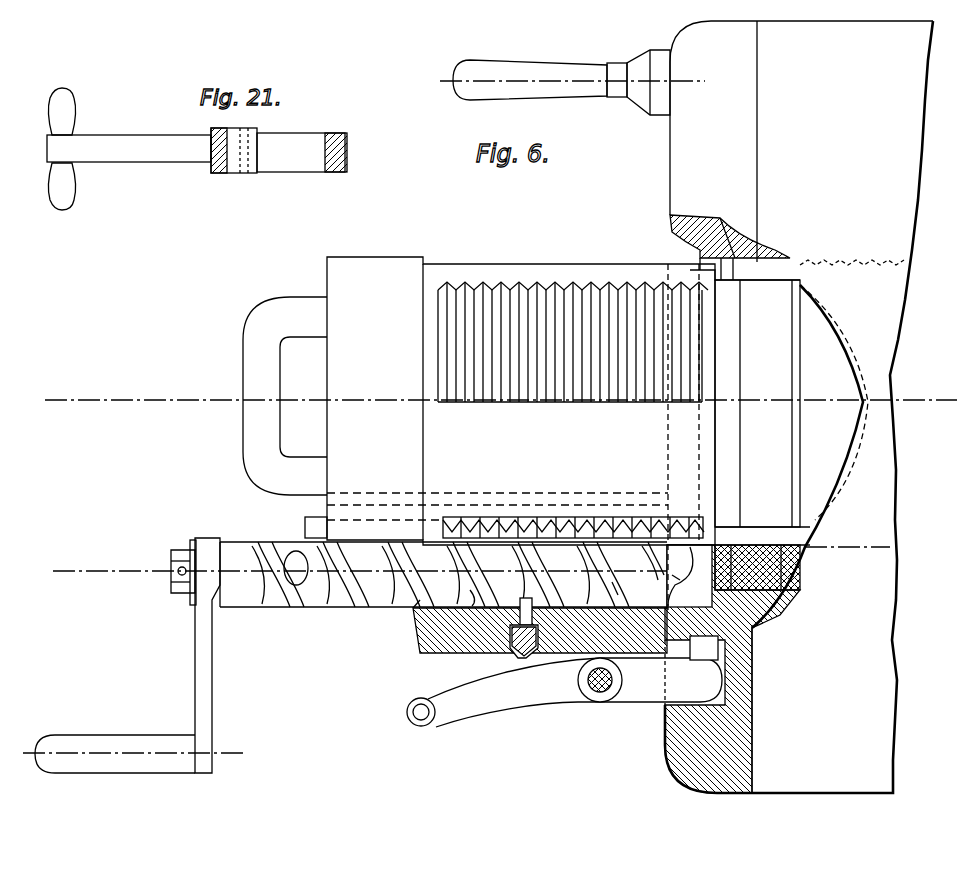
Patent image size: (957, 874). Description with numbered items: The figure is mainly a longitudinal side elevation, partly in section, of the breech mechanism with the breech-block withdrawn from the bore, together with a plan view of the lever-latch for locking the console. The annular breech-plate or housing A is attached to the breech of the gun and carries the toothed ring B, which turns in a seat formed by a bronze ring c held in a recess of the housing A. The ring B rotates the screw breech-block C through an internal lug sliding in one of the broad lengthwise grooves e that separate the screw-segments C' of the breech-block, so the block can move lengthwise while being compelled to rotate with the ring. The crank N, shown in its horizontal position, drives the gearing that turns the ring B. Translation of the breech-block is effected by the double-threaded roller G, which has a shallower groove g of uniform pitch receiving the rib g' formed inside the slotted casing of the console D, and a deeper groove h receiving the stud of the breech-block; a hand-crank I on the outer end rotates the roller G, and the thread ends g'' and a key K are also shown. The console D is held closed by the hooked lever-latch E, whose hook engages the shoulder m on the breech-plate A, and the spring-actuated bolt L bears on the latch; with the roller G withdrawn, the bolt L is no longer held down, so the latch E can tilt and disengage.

In FIG. 6, the annular breech-plate or housing A is at (655, 762).
In FIG. 6, the toothed ring B is at (775, 258).
In FIG. 6, the bronze ring c is at (737, 232).
In FIG. 6, the screw breech-block C is at (479, 433).
In FIG. 6, the splined portion of cylinder C' is at (573, 342).
In FIG. 6, the lengthwise grooves e is at (504, 481).
In FIG. 6, the key K is at (305, 527).
In FIG. 6, the crank N is at (561, 76).
In FIG. 6, the double-threaded roller G is at (443, 574).
In FIG. 6, the deeper thread or groove h is at (296, 568).
In FIG. 6, the shallower thread or groove g is at (459, 600).
In FIG. 6, the thread or rib g' is at (495, 612).
In FIG. 6, the worm thread end g'' is at (659, 572).
In FIG. 6, the console D is at (418, 632).
In FIG. 6, the spring-actuated locking bolt L is at (522, 660).
In FIG. 21, the lever-latch E is at (203, 157).
In FIG. 6, the lever-latch E is at (564, 692).
In FIG. 6, the shoulder or catch m is at (692, 652).
In FIG. 6, the hand-crank I is at (196, 664).